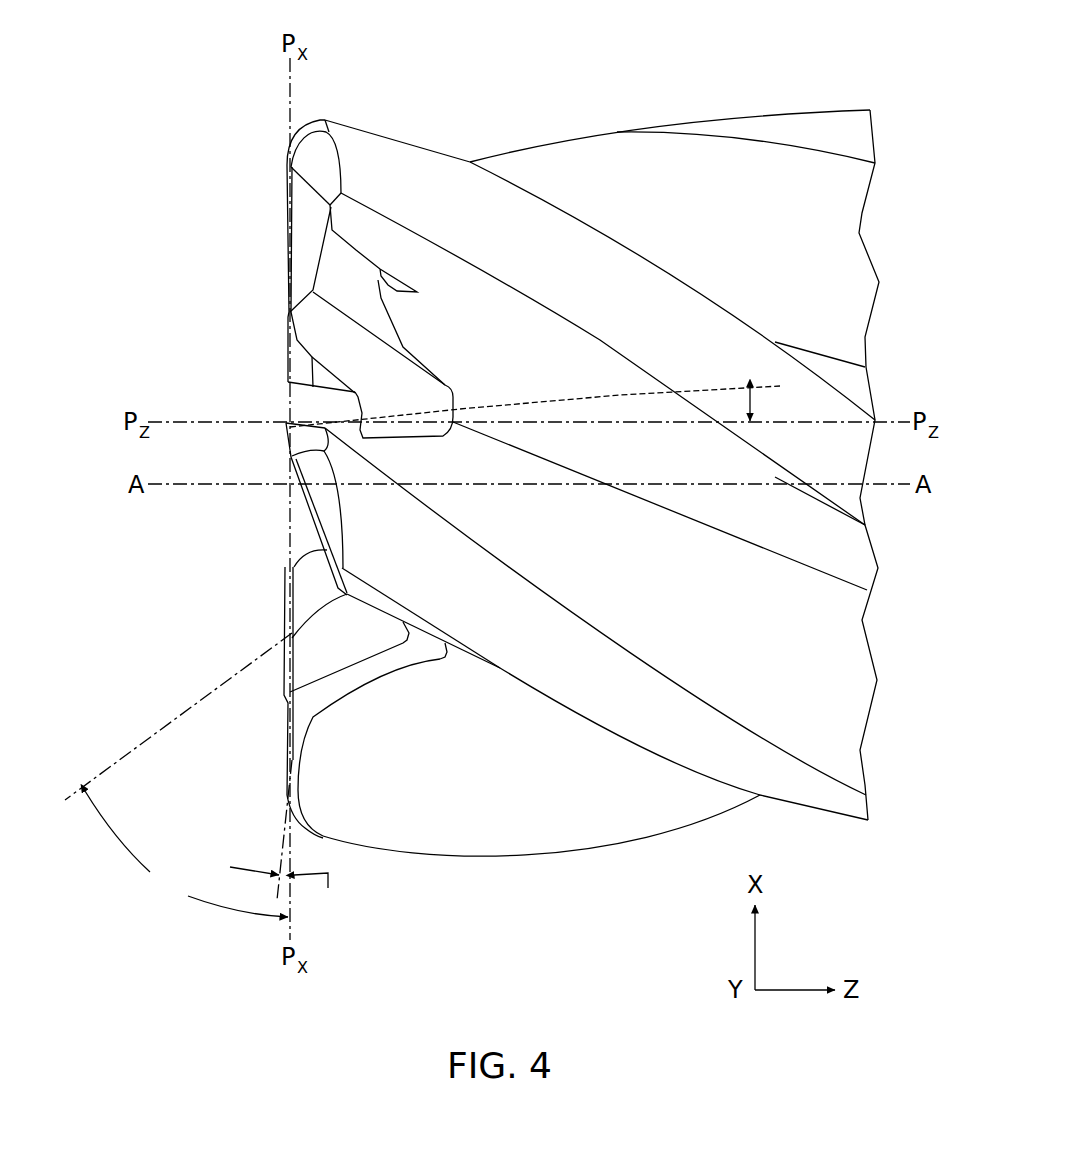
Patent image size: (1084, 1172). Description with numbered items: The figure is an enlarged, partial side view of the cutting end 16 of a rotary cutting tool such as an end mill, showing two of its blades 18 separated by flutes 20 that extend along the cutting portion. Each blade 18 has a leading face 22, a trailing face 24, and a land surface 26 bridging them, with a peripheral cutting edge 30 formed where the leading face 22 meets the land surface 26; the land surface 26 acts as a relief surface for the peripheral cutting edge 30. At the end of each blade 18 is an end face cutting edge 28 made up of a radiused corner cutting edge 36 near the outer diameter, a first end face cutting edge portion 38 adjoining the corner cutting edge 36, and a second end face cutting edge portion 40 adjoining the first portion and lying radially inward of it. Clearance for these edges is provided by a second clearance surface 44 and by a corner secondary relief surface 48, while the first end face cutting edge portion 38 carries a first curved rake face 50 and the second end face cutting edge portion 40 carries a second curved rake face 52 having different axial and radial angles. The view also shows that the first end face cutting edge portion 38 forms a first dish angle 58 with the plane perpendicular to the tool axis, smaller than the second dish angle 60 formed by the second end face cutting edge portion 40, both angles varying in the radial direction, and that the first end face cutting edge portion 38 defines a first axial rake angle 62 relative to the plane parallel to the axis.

The cutting end 16 is at (208, 340).
The blade 18 is at (389, 126).
The flute 20 is at (772, 254).
The leading face 22 is at (550, 822).
The trailing face 24 is at (560, 355).
The land surface 26 is at (443, 185).
The end face cutting edge 28 is at (283, 237).
The peripheral cutting edge 30 is at (520, 176).
The corner cutting edge 36 is at (287, 143).
The first end face cutting edge portion 38 is at (285, 187).
The second end face cutting edge portion 40 is at (320, 613).
The second clearance surface 44 is at (313, 225).
The corner secondary relief surface 48 is at (330, 160).
The first curved rake face 50 is at (310, 696).
The second curved rake face 52 is at (340, 645).
The first dish angle 58 is at (287, 840).
The second dish angle 60 is at (178, 775).
The first axial rake angle 62 is at (758, 405).